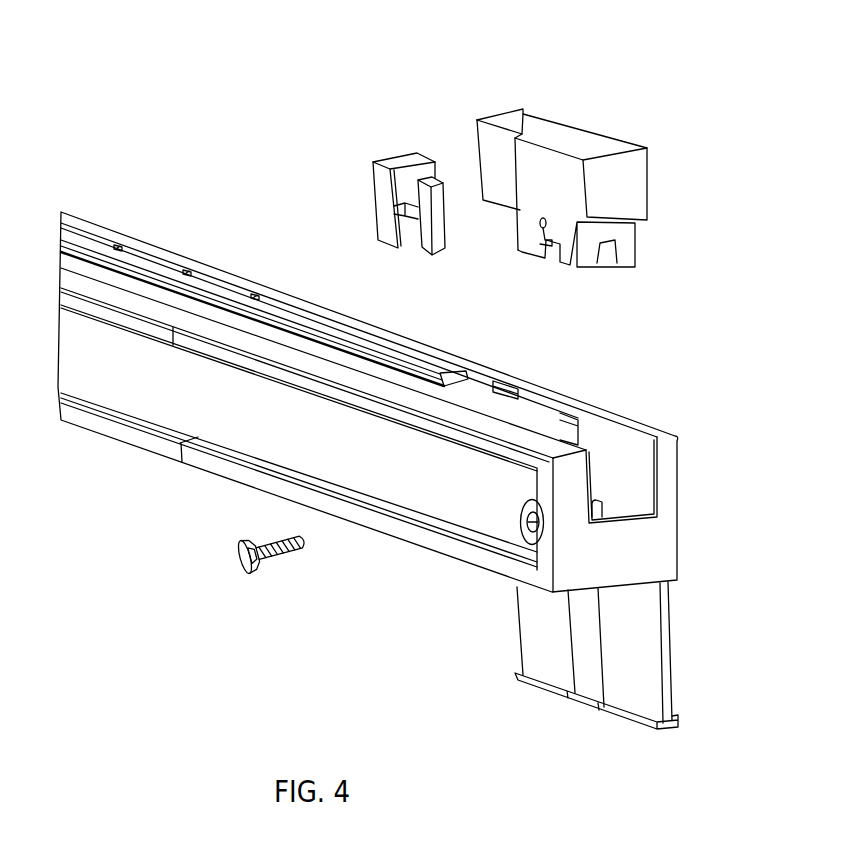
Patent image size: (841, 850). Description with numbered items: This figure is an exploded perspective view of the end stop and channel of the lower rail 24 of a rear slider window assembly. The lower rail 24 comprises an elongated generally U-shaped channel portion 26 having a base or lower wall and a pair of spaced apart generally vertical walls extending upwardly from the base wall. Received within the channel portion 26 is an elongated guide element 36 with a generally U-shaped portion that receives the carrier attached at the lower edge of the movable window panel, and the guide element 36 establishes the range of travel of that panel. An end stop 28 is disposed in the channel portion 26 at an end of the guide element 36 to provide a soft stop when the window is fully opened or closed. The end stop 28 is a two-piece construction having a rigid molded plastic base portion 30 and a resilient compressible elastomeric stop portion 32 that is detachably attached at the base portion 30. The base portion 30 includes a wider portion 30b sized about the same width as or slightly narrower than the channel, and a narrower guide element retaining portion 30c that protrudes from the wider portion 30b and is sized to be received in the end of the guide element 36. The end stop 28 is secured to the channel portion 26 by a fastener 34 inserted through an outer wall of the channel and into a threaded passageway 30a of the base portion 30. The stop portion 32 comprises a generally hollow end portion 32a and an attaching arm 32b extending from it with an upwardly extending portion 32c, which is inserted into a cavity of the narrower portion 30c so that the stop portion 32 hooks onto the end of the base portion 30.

The lower rail 24 is at (213, 509).
The channel portion 26 is at (187, 410).
The end stop 28 is at (451, 88).
The base portion 30 is at (618, 122).
The threaded passageway 30a is at (547, 247).
The wider portion 30b is at (533, 188).
The narrower guide element retaining portion 30c is at (518, 123).
The stop portion 32 is at (341, 170).
The hollow end portion 32a is at (382, 190).
The arm 32b is at (420, 235).
The upwardly extending portion 32c is at (437, 197).
The fastener 34 is at (248, 562).
The guide element 36 is at (156, 278).